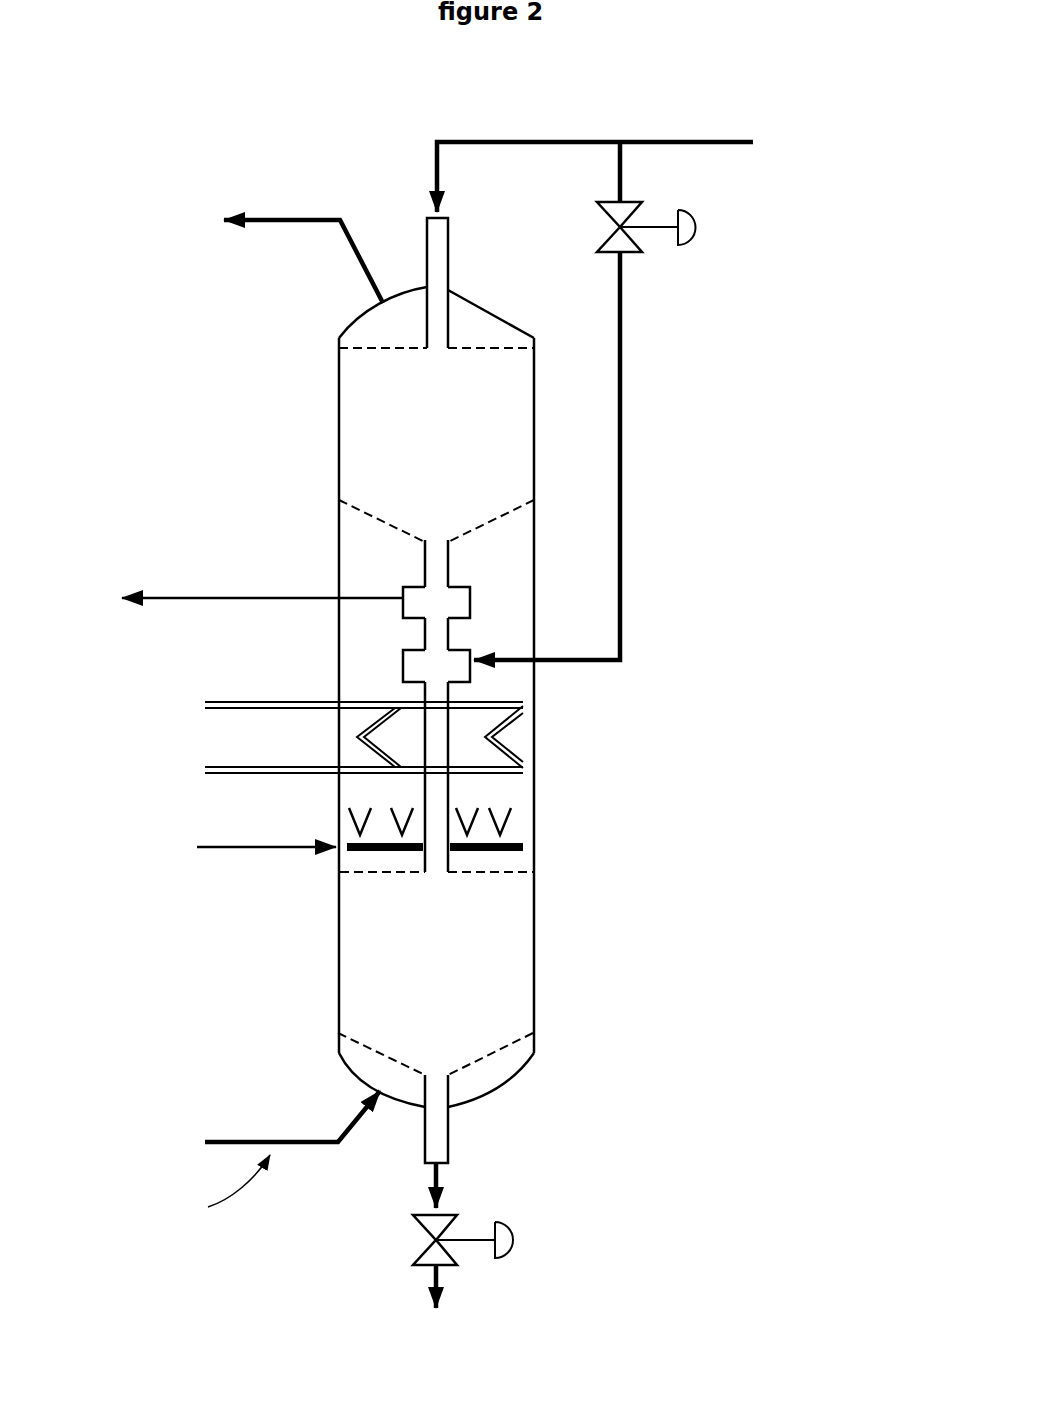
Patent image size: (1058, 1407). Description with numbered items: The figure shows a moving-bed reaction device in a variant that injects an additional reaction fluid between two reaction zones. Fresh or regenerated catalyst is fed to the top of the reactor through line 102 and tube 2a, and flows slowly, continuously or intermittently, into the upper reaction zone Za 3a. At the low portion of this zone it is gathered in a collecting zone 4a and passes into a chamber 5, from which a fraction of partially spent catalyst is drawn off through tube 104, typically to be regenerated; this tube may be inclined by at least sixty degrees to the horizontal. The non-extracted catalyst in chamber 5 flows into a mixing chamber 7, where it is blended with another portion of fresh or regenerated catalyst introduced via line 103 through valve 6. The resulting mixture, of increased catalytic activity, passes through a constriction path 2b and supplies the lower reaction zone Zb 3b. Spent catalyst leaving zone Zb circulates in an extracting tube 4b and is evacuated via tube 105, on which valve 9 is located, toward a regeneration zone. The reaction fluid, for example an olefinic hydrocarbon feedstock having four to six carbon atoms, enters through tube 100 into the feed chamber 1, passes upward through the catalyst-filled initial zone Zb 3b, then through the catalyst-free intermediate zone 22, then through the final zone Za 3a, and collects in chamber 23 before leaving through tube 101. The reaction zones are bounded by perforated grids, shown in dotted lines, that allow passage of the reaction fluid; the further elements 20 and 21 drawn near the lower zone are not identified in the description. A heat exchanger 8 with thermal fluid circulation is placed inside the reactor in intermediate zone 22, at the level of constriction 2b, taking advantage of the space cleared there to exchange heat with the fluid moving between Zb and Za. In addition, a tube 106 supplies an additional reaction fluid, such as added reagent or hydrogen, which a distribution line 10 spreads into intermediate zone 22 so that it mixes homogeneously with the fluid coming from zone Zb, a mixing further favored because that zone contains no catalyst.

The feed chamber 1 is at (472, 1091).
The tube 2a is at (441, 296).
The constriction path 2b is at (442, 738).
The upper reaction zone Za 3a is at (366, 423).
The lower reaction zone Zb 3b is at (390, 954).
The collecting zone 4a is at (433, 542).
The extracting tube 4b is at (444, 1145).
The chamber 5 is at (452, 606).
The valve 6 is at (710, 227).
The mixing chamber 7 is at (442, 660).
The heat exchanger 8 is at (281, 688).
The valve 9 is at (521, 1246).
The distribution line 10 is at (538, 847).
The lower partition 20 is at (390, 1046).
The intermediate plate 21 is at (472, 877).
The intermediate zone 22 is at (368, 650).
The chamber 23 is at (399, 322).
The tube 100 is at (270, 1149).
The tube 101 is at (299, 208).
The line 102 is at (509, 128).
The line 103 is at (628, 372).
The tube 104 is at (269, 583).
The tube 105 is at (428, 1178).
The tube 106 is at (270, 836).